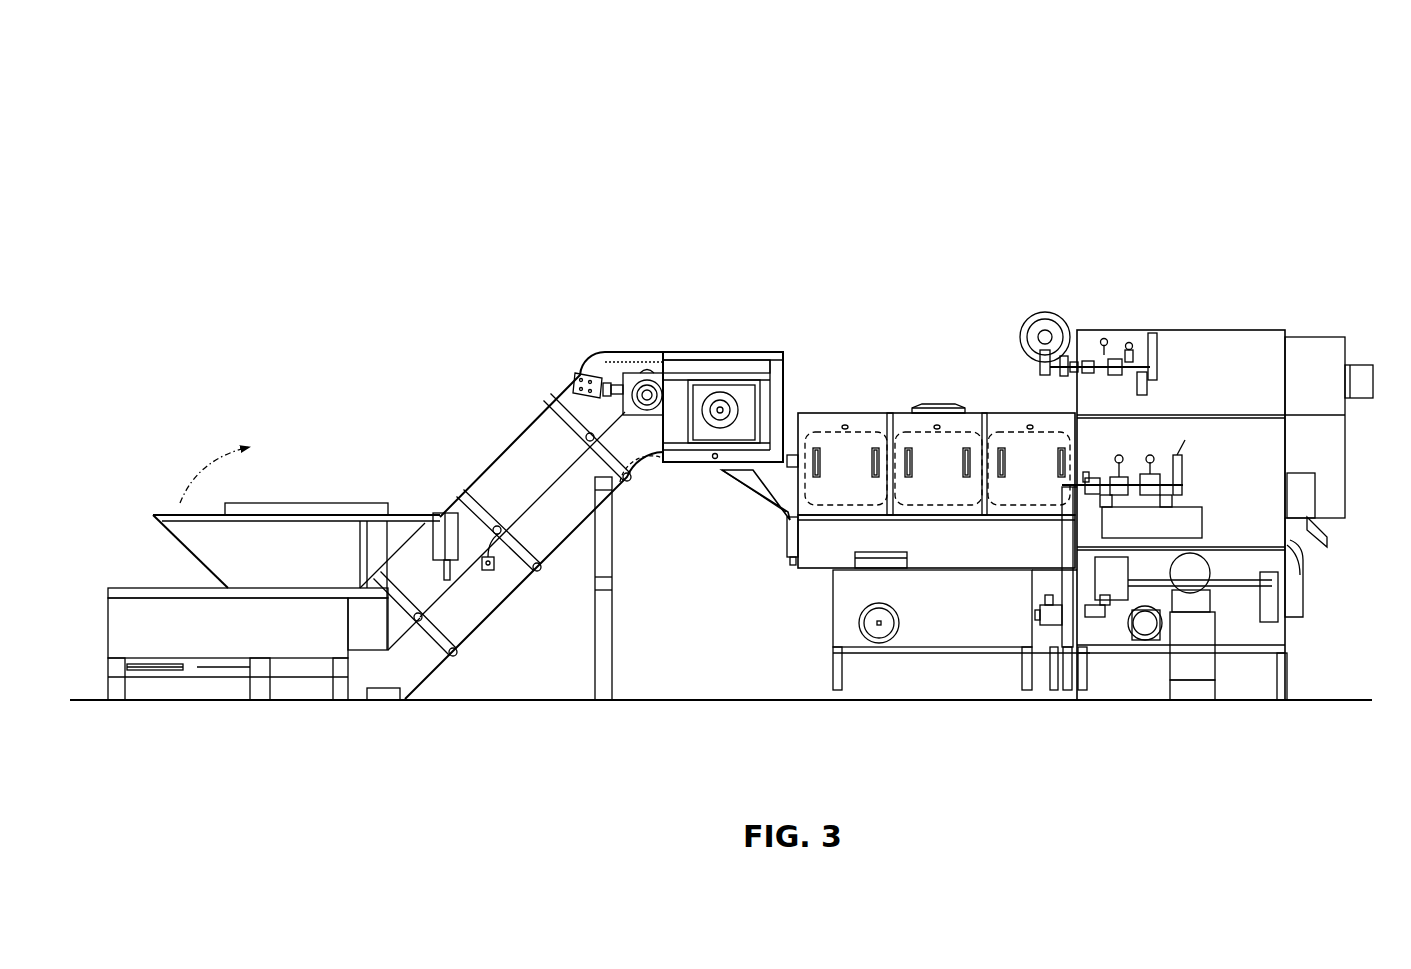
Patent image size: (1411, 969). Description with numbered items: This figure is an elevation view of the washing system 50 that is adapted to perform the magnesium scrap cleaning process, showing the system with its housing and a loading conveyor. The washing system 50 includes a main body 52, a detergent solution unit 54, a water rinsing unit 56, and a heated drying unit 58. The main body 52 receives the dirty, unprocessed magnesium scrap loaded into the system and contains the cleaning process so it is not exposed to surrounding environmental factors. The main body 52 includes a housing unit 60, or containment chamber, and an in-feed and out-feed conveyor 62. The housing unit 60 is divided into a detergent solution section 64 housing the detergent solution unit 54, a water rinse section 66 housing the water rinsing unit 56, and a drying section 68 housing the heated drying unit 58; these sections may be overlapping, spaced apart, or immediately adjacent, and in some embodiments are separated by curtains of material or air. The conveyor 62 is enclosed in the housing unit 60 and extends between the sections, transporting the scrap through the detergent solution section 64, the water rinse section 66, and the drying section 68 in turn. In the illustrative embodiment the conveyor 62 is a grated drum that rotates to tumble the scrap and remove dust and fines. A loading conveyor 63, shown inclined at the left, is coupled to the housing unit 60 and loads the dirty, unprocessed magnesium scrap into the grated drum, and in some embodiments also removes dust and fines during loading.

The washing system 50 is at (737, 387).
The main body 52 is at (740, 435).
The detergent solution unit 54 is at (843, 458).
The water rinsing unit 56 is at (937, 458).
The heated drying unit 58 is at (1027, 458).
The housing unit 60 is at (965, 343).
The in-feed and out-feed conveyor 62 is at (906, 490).
The loading conveyor 63 is at (642, 340).
The detergent solution section 64 is at (848, 408).
The water rinse section 66 is at (937, 408).
The drying section 68 is at (1023, 408).